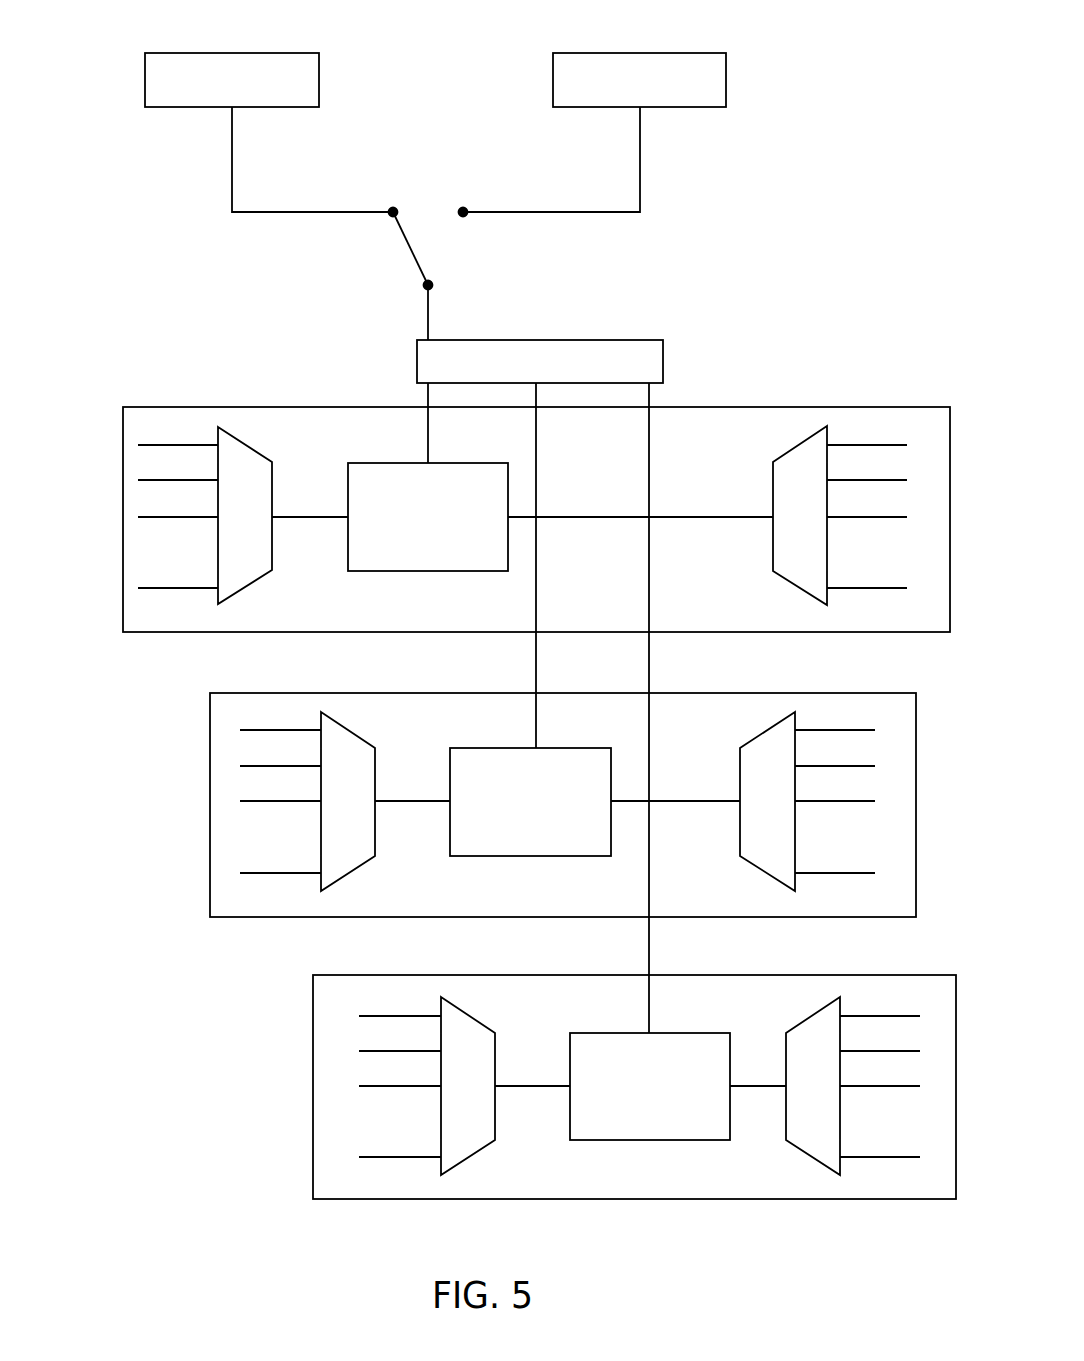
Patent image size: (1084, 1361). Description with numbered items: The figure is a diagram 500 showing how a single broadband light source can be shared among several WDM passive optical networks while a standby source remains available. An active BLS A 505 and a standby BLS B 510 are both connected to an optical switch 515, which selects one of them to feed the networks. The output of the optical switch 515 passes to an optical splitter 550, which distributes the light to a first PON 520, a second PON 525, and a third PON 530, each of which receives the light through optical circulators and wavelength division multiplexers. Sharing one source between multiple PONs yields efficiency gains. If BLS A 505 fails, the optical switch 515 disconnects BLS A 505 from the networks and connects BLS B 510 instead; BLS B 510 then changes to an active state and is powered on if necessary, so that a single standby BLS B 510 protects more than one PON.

The diagram 500 is at (713, 1218).
The BLS A 505 is at (319, 77).
The BLS B 510 is at (726, 77).
The optical switch 515 is at (407, 249).
The first PON 520 is at (170, 632).
The second PON 525 is at (255, 917).
The third PON 530 is at (357, 1199).
The optical splitter 550 is at (663, 362).